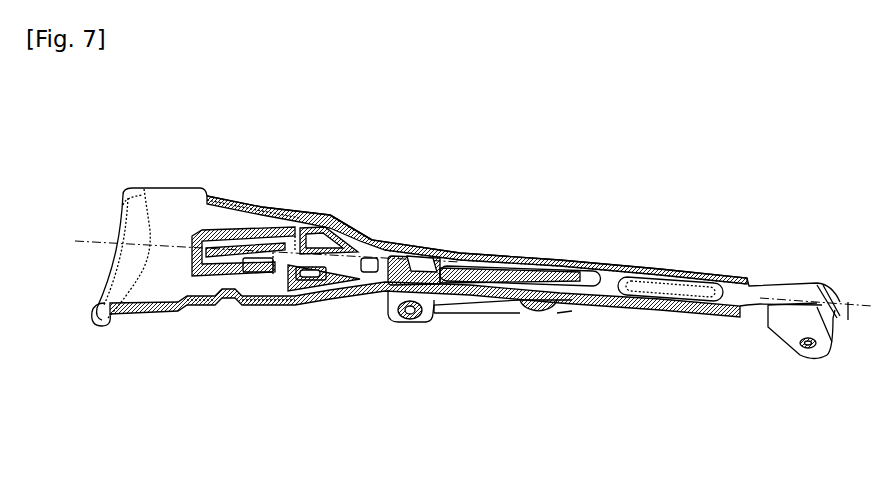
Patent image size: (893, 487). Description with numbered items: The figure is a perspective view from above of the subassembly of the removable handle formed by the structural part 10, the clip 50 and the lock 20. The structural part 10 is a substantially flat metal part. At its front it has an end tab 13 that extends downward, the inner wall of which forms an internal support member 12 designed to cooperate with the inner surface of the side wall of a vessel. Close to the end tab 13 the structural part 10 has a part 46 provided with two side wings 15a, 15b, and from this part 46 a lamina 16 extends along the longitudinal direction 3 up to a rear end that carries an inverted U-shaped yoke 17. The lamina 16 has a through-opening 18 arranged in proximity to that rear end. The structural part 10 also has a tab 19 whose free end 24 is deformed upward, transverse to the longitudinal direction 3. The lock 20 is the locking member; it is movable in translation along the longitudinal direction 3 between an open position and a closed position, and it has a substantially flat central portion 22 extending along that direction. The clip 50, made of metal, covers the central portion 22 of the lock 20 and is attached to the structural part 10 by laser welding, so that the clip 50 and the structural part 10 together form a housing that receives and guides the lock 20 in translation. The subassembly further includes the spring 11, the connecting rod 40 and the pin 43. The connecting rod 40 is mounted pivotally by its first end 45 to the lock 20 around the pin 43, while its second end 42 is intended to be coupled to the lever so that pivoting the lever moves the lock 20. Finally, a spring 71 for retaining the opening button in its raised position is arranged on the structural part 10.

The longitudinal direction 3 is at (850, 305).
The structural part 10 is at (387, 258).
The spring 11 is at (313, 300).
The internal support member 12 is at (115, 318).
The end tab 13 is at (93, 324).
The side wing 15a is at (236, 305).
The side wing 15b is at (277, 222).
The lamina 16 is at (662, 270).
The inverted U-shaped yoke 17 is at (800, 332).
The through-opening 18 is at (590, 268).
The tab 19 is at (255, 248).
The lock 20 is at (352, 240).
The central portion 22 is at (285, 240).
The free end 24 is at (218, 248).
The connecting rod 40 is at (485, 306).
The second end 42 is at (522, 310).
The pin 43 is at (413, 313).
The first end 45 is at (445, 308).
The part provided with two side wings 46 is at (259, 305).
The clip 50 is at (278, 305).
The spring 71 is at (430, 268).